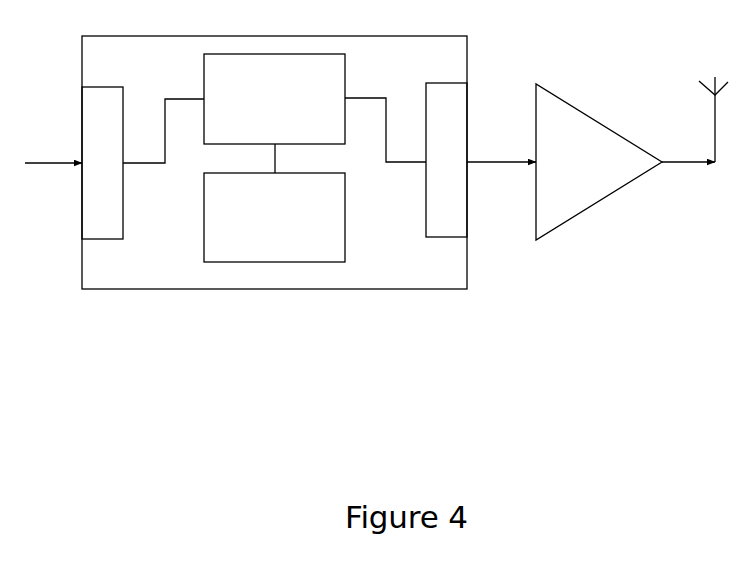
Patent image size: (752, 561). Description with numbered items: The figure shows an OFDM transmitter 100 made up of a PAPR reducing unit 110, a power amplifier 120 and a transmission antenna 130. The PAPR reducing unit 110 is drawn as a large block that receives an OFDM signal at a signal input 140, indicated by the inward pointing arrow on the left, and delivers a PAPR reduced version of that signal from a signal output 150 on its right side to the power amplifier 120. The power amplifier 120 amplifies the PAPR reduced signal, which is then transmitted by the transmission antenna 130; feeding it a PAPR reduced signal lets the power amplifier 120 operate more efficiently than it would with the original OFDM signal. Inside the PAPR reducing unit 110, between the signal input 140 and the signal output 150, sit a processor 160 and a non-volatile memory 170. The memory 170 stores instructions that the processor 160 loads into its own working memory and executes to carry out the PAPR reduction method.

The OFDM transmitter 100 is at (535, 324).
The PAPR reducing unit 110 is at (274, 162).
The power amplifier 120 is at (625, 162).
The transmission antenna 130 is at (713, 119).
The signal input 140 is at (114, 163).
The signal output 150 is at (481, 160).
The processor 160 is at (315, 113).
The non-volatile memory 170 is at (274, 217).